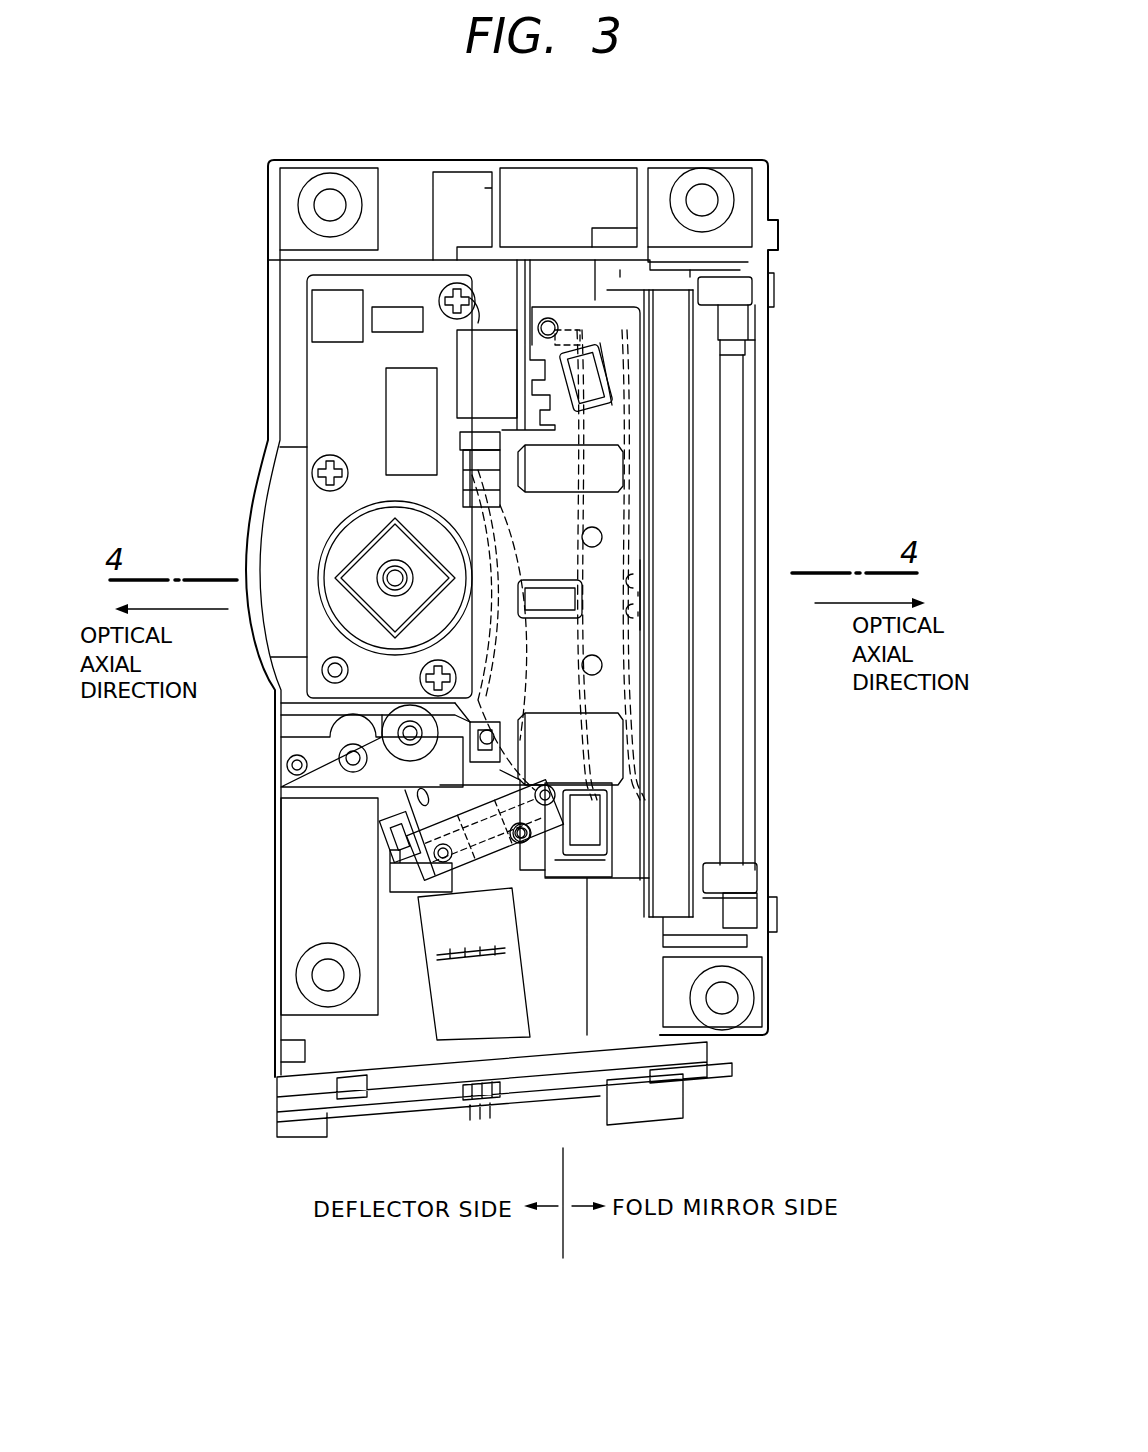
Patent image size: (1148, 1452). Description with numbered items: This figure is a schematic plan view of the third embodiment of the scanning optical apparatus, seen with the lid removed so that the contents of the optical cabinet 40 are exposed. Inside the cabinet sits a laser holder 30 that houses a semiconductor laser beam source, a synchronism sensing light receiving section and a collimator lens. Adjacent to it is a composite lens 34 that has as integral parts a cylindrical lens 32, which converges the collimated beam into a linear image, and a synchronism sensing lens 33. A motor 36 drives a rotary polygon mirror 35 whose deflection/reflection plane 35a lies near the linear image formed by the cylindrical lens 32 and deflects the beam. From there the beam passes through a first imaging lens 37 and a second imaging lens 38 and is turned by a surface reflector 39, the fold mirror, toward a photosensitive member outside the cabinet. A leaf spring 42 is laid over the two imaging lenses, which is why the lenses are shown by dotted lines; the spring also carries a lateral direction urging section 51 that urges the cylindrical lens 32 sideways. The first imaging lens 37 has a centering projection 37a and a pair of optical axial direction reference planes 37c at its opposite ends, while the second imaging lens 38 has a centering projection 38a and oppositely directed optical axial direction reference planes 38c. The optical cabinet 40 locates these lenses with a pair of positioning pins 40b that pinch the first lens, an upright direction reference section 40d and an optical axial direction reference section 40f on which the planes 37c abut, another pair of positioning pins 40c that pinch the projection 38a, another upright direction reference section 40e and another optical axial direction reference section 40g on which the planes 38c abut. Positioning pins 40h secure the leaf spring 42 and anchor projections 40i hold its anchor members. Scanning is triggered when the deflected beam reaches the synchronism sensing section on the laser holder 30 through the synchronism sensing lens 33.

The laser holder 30 is at (440, 1080).
The cylindrical lens 32 is at (395, 834).
The synchronism sensing lens 33 is at (478, 822).
The composite lens 34 is at (482, 882).
The rotary polygon mirror 35 is at (350, 592).
The deflection/reflection plane 35a is at (370, 612).
The motor 36 is at (345, 541).
The first imaging lens 37 is at (487, 524).
The centering projection 37a is at (548, 606).
The optical axial direction reference plane 37c is at (490, 470).
The second imaging lens 38 is at (625, 440).
The centering projection 38a is at (642, 612).
The optical axial direction reference plane 38c is at (612, 362).
The surface reflector 39 is at (712, 748).
The optical cabinet 40 is at (585, 178).
The positioning pins 40b is at (633, 580).
The positioning pins 40c is at (636, 594).
The upright direction reference section 40d is at (470, 450).
The upright direction reference section 40e is at (655, 352).
The optical axial direction reference section 40f is at (458, 742).
The optical axial direction reference section 40g is at (703, 872).
The positioning pins 40h is at (548, 318).
The anchor projections 40i is at (640, 407).
The leaf spring 42 is at (622, 742).
The lateral direction urging section 51 is at (597, 792).